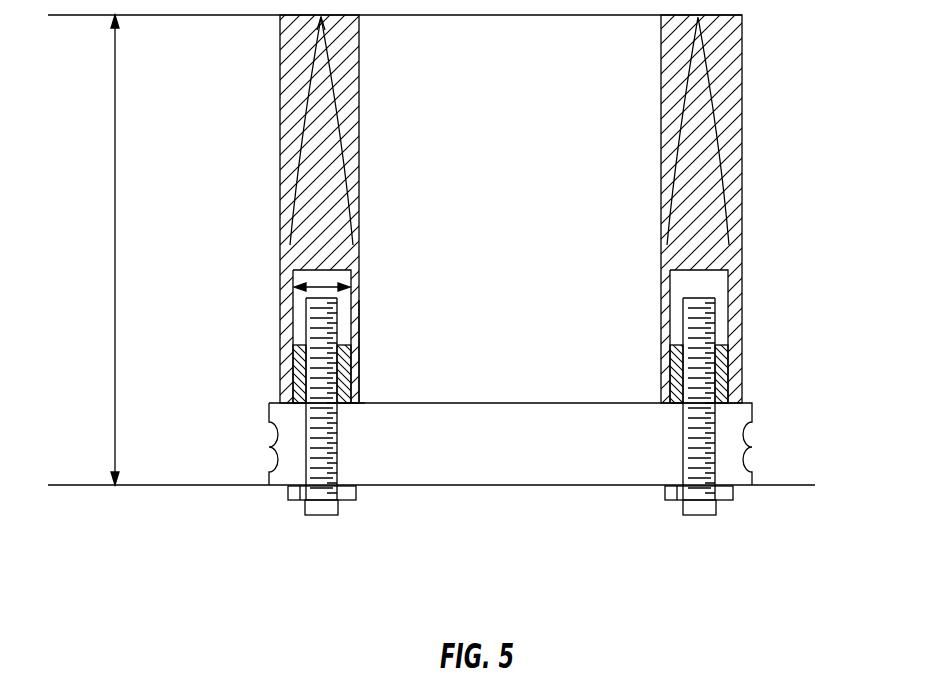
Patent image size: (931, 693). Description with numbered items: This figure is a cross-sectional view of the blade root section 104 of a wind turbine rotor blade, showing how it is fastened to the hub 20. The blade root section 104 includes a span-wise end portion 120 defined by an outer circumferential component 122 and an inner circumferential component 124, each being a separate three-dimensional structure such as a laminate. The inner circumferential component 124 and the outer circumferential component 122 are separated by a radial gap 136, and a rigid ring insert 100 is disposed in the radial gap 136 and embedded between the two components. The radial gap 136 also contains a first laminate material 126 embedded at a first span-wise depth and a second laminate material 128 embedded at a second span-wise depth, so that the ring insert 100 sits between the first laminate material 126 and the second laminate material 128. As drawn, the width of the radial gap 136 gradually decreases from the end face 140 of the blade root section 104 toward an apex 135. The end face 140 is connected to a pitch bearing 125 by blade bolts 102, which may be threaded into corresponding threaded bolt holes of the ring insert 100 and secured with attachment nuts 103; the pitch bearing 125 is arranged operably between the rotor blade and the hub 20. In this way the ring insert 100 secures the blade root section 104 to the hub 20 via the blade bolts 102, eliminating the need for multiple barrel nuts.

The hub 20 is at (787, 485).
The ring insert 100 is at (565, 366).
The blade bolts 102 is at (327, 456).
The attachment nuts 103 is at (288, 492).
The blade root section 104 is at (745, 89).
The span-wise end portion 120 is at (115, 237).
The outer circumferential component 122 is at (281, 353).
The inner circumferential component 124 is at (361, 353).
The pitch bearing 125 is at (753, 440).
The first laminate material 126 is at (492, 131).
The second laminate material 128 is at (297, 382).
The apex 135 is at (283, 42).
The radial gap 136 is at (318, 282).
The end face 140 is at (352, 403).